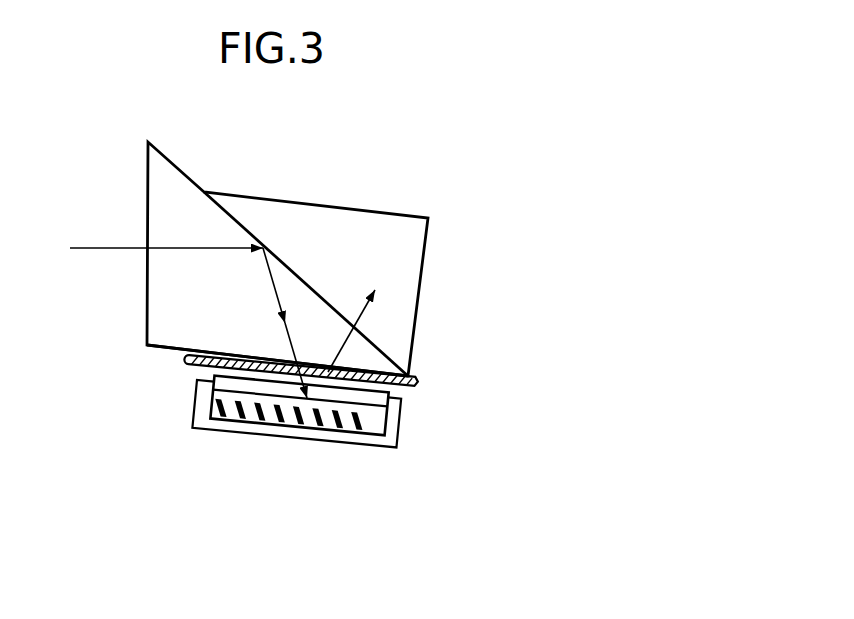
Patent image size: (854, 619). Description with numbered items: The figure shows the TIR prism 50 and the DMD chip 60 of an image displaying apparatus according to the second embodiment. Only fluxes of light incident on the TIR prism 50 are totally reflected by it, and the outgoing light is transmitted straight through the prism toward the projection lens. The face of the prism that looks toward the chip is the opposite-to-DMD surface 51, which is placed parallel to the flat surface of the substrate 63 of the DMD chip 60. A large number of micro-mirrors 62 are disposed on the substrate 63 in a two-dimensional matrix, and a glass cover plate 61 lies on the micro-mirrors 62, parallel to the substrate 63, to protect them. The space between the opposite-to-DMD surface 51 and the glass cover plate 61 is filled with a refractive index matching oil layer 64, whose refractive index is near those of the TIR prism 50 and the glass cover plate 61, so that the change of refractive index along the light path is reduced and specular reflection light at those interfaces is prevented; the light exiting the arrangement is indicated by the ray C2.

The TIR prism 50 is at (220, 193).
The opposite-to-DMD surface 51 is at (160, 351).
The DMD chip 60 is at (300, 430).
The glass cover plate 61 is at (296, 413).
The micro-mirrors 62 is at (289, 414).
The substrate 63 is at (299, 406).
The refractive index matching oil layer 64 is at (301, 370).
The light ray C2 is at (363, 316).